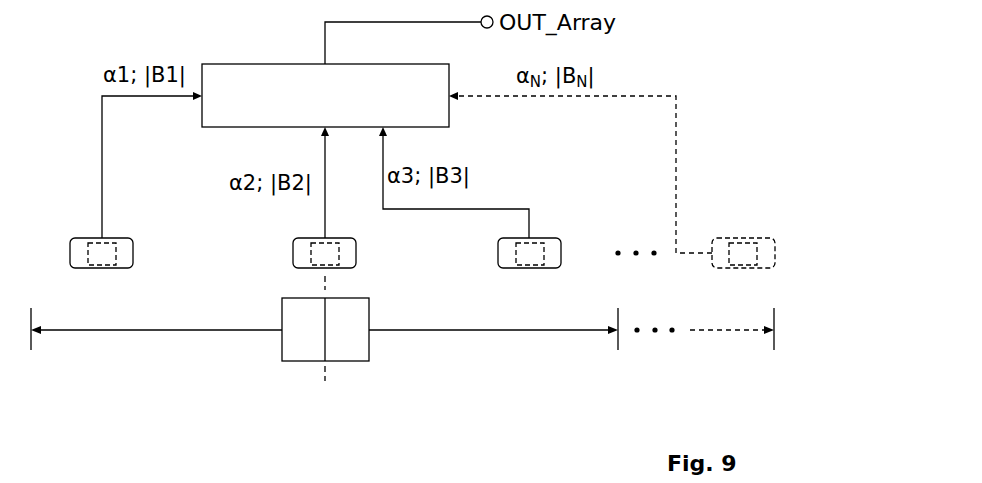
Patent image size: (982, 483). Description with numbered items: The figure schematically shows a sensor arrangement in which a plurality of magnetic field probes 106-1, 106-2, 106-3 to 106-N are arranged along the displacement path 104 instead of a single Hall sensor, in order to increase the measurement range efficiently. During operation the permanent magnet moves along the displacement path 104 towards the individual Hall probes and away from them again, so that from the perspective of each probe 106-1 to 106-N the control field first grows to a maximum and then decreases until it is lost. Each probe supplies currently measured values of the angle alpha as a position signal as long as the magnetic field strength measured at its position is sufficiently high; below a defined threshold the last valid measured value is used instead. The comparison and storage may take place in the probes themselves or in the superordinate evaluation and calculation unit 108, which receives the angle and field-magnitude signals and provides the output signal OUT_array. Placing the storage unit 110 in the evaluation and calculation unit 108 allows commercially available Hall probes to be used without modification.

The displacement path 104 is at (620, 383).
The first magnetic field probe 106-1 is at (96, 255).
The second magnetic field probe 106-2 is at (320, 237).
The third magnetic field probe 106-3 is at (525, 237).
The N-th magnetic field probe 106-N is at (757, 237).
The evaluation and calculation unit 108 is at (266, 64).
The storage unit 110 is at (102, 257).